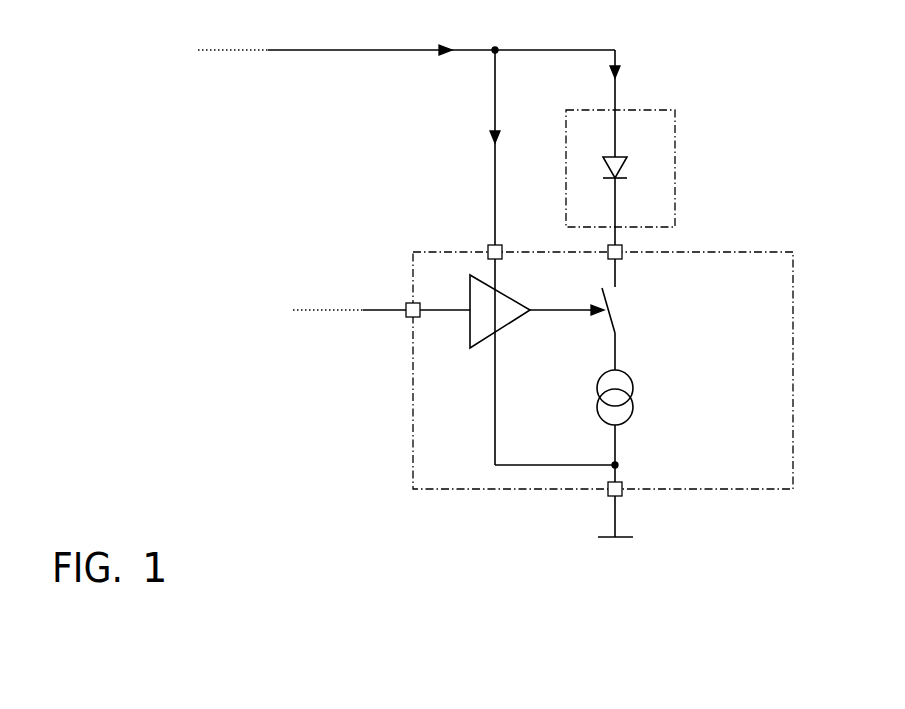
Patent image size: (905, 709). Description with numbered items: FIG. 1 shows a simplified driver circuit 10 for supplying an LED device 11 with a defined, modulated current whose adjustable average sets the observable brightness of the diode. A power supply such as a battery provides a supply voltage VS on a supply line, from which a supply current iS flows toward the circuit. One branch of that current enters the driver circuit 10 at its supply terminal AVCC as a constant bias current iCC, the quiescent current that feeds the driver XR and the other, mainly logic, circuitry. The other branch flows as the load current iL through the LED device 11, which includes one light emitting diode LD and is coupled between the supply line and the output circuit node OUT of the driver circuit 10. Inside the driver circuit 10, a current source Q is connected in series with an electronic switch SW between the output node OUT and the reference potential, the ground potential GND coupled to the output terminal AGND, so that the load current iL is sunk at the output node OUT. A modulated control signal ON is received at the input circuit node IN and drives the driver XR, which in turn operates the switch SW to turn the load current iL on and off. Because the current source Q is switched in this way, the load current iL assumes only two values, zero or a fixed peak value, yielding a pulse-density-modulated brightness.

The driver circuit 10 is at (599, 368).
The LED device 11 is at (684, 177).
The light emitting diode LD is at (627, 201).
The switch SW is at (660, 329).
The current source Q is at (685, 408).
The driver XR is at (512, 313).
The input circuit node IN is at (421, 321).
The output circuit node OUT is at (633, 261).
The supply terminal AVCC is at (476, 238).
The output terminal AGND is at (634, 500).
The ground potential GND is at (633, 527).
The modulated control signal ON is at (271, 299).
The supply voltage VS is at (265, 34).
The supply current iS is at (465, 36).
The load current iL is at (679, 103).
The bias current iCC is at (426, 147).